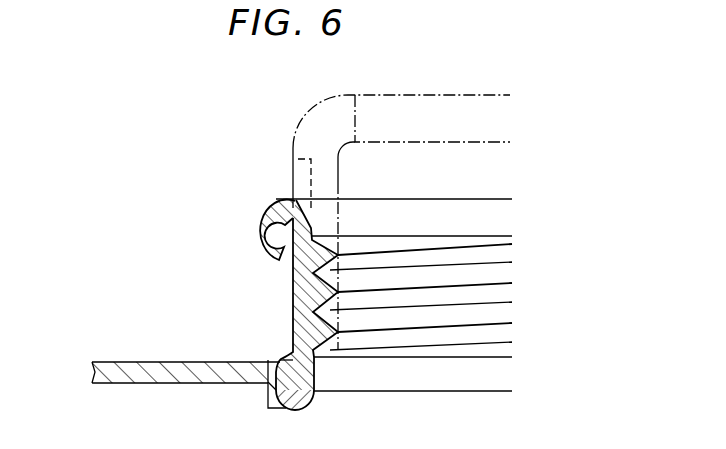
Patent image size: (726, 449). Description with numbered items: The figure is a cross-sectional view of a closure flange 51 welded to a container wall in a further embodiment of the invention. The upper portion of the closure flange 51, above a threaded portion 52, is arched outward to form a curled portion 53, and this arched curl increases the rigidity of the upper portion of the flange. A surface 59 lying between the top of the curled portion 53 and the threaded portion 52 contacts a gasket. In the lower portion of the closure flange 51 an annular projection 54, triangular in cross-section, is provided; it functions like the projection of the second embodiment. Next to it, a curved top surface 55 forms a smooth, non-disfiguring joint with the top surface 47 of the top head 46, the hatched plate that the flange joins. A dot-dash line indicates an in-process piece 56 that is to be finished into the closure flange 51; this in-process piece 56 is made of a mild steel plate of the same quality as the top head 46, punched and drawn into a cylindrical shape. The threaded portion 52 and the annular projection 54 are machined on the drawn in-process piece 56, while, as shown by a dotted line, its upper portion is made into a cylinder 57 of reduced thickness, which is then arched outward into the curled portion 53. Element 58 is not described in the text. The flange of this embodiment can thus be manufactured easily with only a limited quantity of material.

The top head 46 is at (167, 376).
The top surface of the top head 47 is at (204, 363).
The closure flange 51 is at (291, 289).
The threaded portion 52 is at (488, 297).
The curled portion 53 is at (248, 228).
The annular projection 54 is at (293, 368).
The curved top surface 55 is at (279, 358).
The in-process piece 56 is at (322, 133).
The cylinder of reduced thickness 57 is at (295, 174).
The frame wall 58 is at (280, 198).
The surface 59 is at (313, 226).